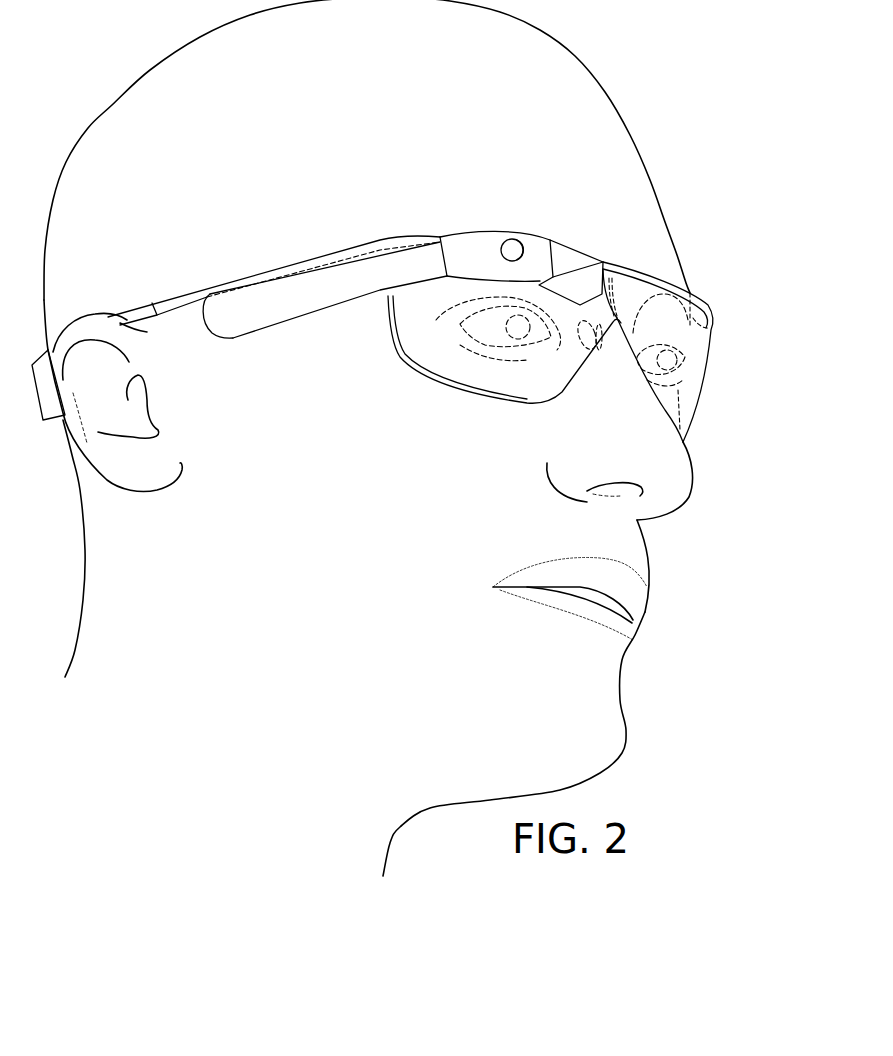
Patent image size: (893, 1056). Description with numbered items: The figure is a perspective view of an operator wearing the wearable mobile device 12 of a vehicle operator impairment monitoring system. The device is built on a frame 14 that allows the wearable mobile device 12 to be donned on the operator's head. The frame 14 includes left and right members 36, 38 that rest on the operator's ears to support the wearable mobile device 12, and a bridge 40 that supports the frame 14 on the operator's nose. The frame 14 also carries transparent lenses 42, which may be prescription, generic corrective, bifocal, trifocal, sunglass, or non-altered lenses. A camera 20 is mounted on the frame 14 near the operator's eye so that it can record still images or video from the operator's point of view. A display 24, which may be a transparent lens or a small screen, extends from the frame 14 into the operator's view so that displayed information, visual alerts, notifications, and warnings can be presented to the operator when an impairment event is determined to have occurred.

The wearable mobile device 12 is at (408, 312).
The frame 14 is at (232, 242).
The camera 20 is at (514, 247).
The display 24 is at (568, 257).
The left member 36 is at (203, 290).
The right member 38 is at (710, 325).
The bridge 40 is at (633, 270).
The transparent lenses 42 is at (560, 363).